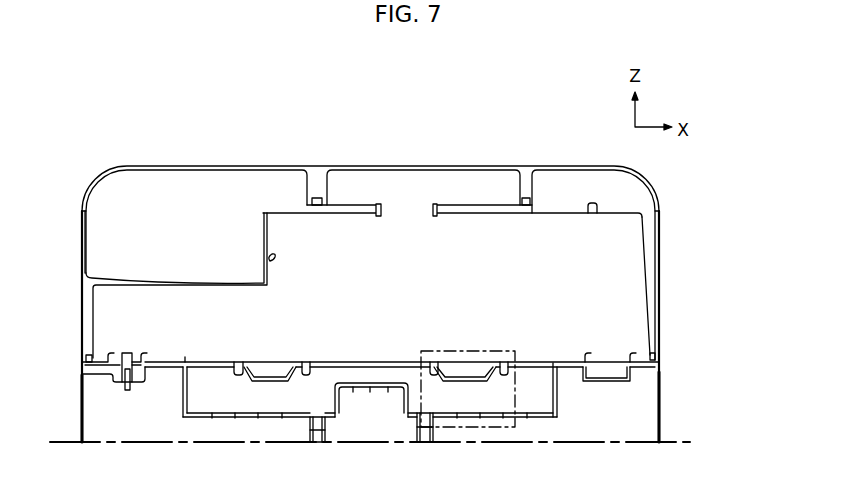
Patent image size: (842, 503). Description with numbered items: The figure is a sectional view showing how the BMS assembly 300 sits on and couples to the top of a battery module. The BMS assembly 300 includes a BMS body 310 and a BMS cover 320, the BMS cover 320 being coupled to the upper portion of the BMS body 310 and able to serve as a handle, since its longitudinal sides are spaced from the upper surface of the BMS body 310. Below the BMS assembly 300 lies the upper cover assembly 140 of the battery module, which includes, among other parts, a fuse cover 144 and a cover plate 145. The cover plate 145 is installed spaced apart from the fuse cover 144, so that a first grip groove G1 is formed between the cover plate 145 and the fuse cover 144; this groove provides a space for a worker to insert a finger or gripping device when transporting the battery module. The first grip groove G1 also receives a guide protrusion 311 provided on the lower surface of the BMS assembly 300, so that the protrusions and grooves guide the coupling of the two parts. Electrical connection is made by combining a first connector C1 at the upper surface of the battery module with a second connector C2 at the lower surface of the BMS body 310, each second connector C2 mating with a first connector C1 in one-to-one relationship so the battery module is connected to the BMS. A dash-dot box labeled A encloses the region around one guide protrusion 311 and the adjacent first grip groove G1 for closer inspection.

The BMS assembly 300 is at (434, 263).
The BMS body 310 is at (406, 284).
The BMS cover 320 is at (660, 196).
The upper cover assembly 140 is at (672, 399).
The guide protrusion 311 is at (273, 373).
The fuse cover 144 is at (381, 396).
The cover plate 145 is at (536, 368).
The first grip groove G1 is at (497, 392).
The first connector C1 is at (126, 392).
The second connector C2 is at (125, 353).
The detail region A is at (476, 350).